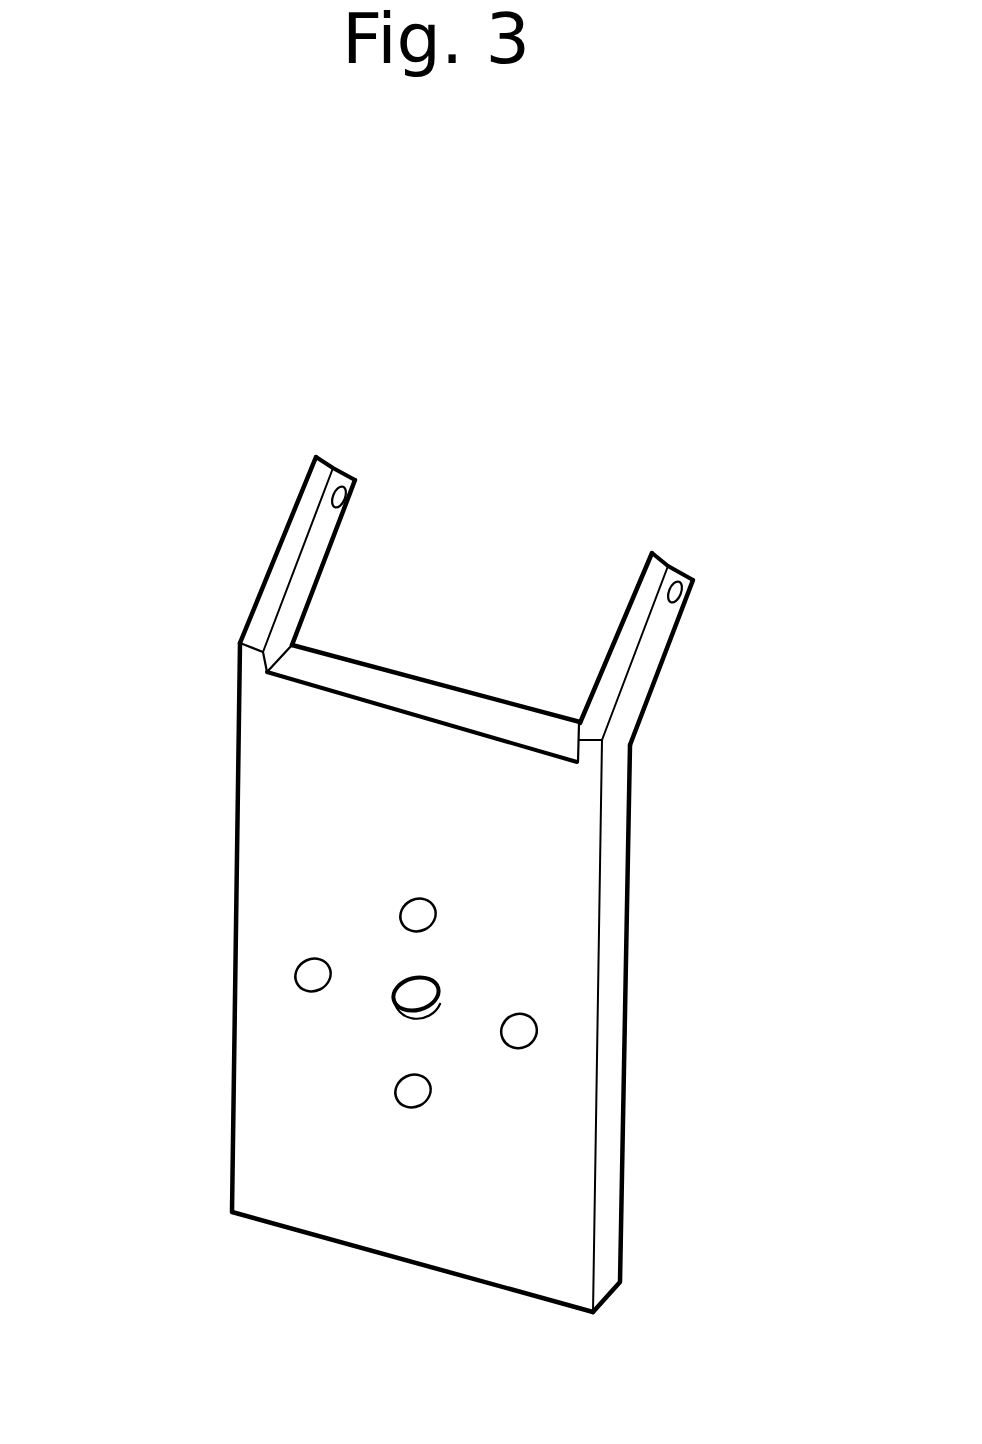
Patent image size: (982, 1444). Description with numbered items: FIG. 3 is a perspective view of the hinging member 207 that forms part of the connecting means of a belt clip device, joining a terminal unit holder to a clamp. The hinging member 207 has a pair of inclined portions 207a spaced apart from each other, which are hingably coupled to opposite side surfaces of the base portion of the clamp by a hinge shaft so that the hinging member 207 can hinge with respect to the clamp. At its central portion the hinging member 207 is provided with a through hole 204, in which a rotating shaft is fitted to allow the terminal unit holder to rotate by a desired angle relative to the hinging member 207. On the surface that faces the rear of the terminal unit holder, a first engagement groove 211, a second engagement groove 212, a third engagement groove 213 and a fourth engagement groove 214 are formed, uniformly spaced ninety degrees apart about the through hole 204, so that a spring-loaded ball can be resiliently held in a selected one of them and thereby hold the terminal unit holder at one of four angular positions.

The hinging member 207 is at (520, 470).
The inclined portions 207a is at (648, 666).
The through hole 204 is at (423, 985).
The first engagement groove 211 is at (407, 905).
The second engagement groove 212 is at (305, 972).
The third engagement groove 213 is at (407, 1088).
The fourth engagement groove 214 is at (521, 1033).